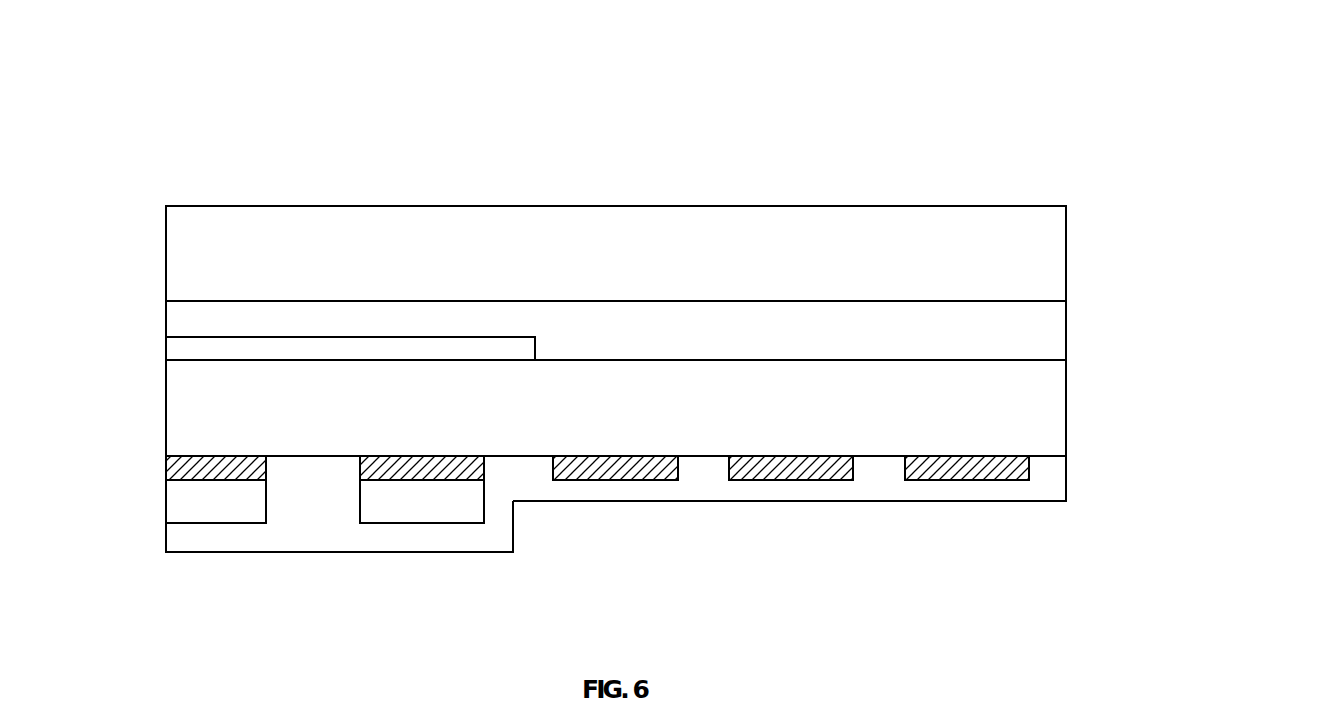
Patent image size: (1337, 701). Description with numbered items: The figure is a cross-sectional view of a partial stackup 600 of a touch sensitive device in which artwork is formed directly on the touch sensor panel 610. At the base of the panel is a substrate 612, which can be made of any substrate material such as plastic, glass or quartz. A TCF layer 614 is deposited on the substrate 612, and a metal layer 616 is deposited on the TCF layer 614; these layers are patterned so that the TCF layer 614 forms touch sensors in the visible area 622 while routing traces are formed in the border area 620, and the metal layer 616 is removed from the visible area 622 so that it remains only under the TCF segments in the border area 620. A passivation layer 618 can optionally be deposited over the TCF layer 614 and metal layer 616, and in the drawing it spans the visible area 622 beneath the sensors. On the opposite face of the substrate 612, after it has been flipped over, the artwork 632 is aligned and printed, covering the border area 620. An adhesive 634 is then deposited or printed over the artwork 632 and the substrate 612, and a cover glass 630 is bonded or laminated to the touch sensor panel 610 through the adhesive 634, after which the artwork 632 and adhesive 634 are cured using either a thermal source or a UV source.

The partial stackup 600 is at (316, 140).
The touch sensor panel 610 is at (662, 466).
The substrate 612 is at (1050, 417).
The TCF layer 614 is at (166, 466).
The metal layer 616 is at (170, 500).
The passivation layer 618 is at (1051, 484).
The border area 620 is at (535, 592).
The visible area 622 is at (535, 592).
The cover glass 630 is at (784, 220).
The artwork 632 is at (181, 351).
The adhesive 634 is at (1048, 331).